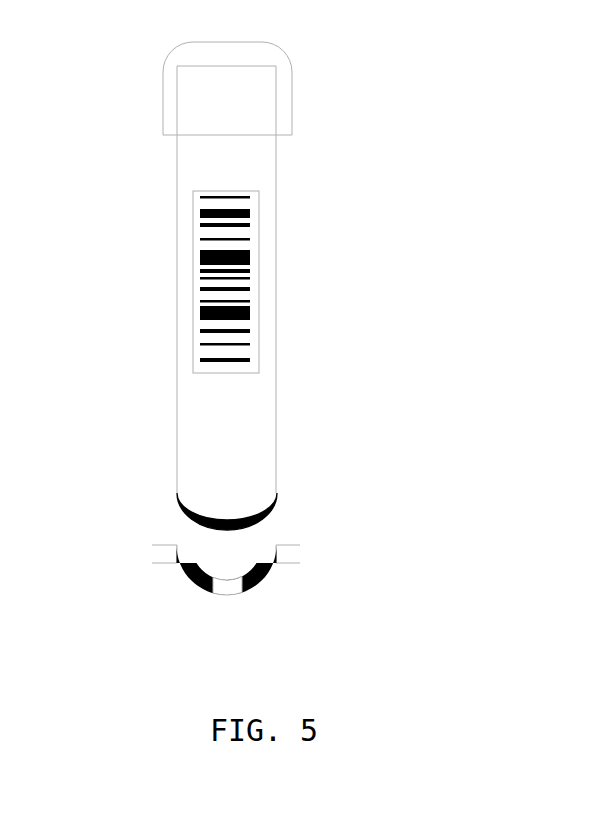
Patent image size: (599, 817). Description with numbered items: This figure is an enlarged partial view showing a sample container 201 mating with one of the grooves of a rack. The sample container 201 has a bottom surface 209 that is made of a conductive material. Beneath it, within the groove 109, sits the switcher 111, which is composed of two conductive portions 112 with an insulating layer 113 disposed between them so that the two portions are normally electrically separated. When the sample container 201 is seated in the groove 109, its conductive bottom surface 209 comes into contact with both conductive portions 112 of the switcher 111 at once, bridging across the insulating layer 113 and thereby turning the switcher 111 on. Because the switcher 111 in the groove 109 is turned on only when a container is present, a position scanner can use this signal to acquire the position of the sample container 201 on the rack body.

The sample container 201 is at (277, 433).
The bottom surface 209 is at (202, 527).
The groove 109 is at (232, 557).
The switcher 111 is at (299, 607).
The conductive portions 112 is at (270, 580).
The insulating layer 113 is at (223, 600).